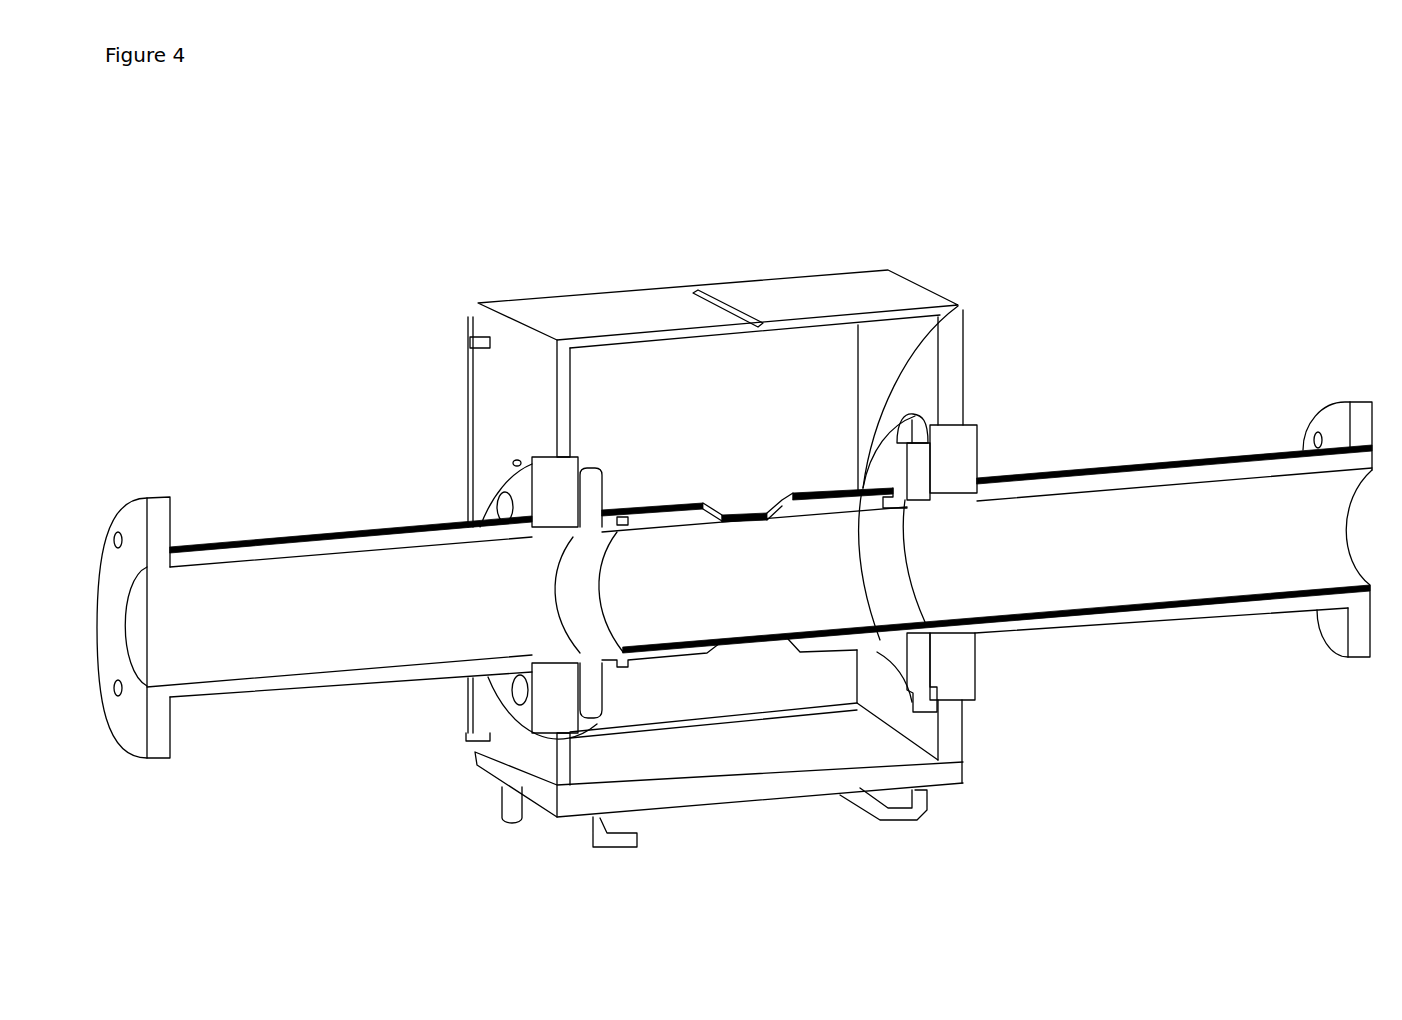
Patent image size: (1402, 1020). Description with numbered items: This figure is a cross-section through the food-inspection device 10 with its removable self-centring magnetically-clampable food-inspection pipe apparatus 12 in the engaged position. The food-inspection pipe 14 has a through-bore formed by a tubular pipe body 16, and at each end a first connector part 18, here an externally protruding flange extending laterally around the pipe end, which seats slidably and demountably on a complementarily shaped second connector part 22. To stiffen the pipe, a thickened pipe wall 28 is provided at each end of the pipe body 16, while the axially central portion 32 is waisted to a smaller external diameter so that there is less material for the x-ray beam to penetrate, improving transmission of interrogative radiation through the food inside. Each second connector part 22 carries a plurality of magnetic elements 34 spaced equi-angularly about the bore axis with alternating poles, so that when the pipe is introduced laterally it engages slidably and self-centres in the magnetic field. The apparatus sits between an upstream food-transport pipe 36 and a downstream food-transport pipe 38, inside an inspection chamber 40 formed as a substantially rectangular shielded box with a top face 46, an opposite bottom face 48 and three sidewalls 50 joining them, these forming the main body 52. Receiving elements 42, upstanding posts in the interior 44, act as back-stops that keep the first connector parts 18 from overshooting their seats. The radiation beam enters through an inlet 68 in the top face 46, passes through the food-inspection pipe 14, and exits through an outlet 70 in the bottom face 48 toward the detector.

The food-inspection device 10 is at (310, 250).
The removable self-centring magnetically-clampable food-inspection pipe apparatus 12 is at (978, 655).
The food-inspection pipe 14 is at (960, 306).
The tubular pipe body 16 is at (688, 668).
The first connector part 18 is at (558, 475).
The second connector part 22 is at (590, 478).
The thickened pipe wall 28 is at (802, 748).
The axially central portion 32 is at (743, 647).
The magnetic element 34 is at (503, 500).
The upstream food-transport pipe 36 is at (1145, 462).
The downstream food-transport pipe 38 is at (340, 532).
The inspection chamber 40 is at (942, 284).
The receiving element 42 is at (822, 487).
The interior 44 is at (825, 397).
The top face 46 is at (778, 296).
The bottom face 48 is at (832, 642).
The sidewall 50 is at (621, 431).
The main body 52 is at (598, 290).
The inlet 68 is at (717, 300).
The outlet 70 is at (760, 803).